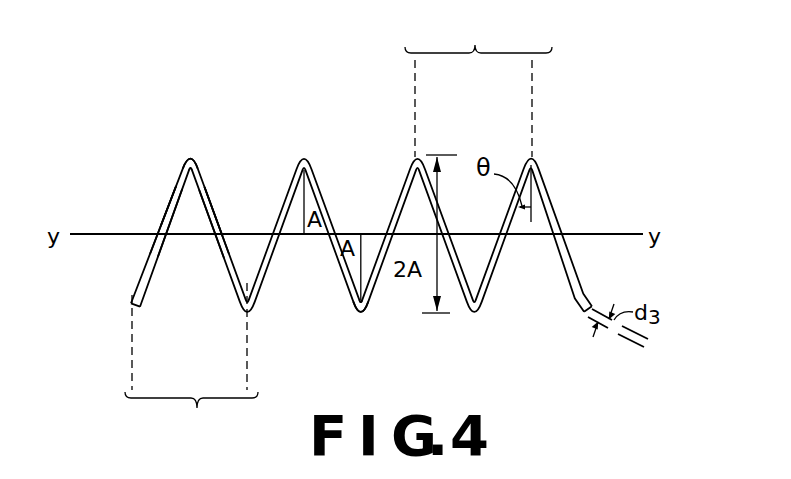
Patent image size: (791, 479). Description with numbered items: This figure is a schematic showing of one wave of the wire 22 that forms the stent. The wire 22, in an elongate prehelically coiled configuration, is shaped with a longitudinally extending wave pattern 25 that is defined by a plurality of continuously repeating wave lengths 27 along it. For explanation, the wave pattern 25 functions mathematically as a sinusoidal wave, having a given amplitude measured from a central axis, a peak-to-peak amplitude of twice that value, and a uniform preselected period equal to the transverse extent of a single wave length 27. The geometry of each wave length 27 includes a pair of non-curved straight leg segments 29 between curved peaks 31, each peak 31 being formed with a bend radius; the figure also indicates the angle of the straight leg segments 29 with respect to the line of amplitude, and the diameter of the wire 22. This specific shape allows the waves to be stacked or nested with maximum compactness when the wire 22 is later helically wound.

The wire 22 is at (545, 181).
The wave pattern 25 is at (163, 178).
The wave length 27 is at (338, 231).
The straight leg segment 29 is at (204, 186).
The curved peak 31 is at (186, 159).